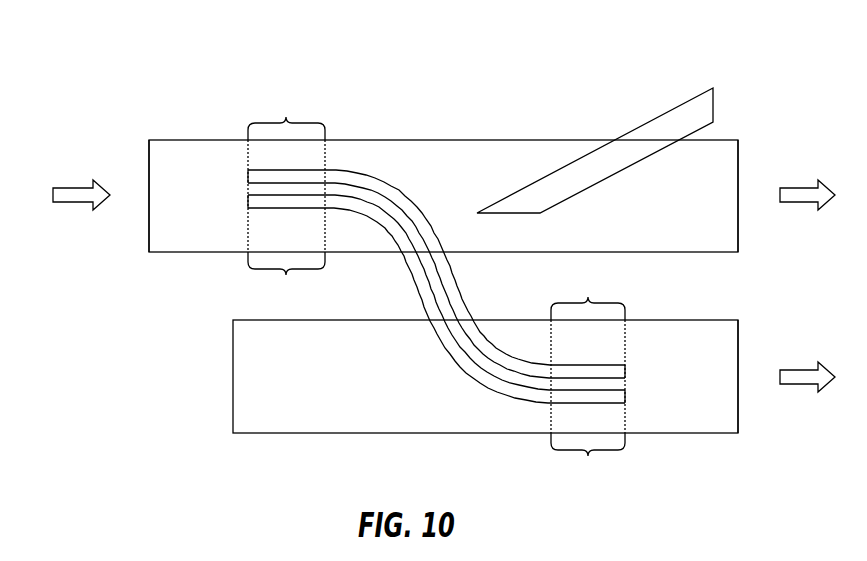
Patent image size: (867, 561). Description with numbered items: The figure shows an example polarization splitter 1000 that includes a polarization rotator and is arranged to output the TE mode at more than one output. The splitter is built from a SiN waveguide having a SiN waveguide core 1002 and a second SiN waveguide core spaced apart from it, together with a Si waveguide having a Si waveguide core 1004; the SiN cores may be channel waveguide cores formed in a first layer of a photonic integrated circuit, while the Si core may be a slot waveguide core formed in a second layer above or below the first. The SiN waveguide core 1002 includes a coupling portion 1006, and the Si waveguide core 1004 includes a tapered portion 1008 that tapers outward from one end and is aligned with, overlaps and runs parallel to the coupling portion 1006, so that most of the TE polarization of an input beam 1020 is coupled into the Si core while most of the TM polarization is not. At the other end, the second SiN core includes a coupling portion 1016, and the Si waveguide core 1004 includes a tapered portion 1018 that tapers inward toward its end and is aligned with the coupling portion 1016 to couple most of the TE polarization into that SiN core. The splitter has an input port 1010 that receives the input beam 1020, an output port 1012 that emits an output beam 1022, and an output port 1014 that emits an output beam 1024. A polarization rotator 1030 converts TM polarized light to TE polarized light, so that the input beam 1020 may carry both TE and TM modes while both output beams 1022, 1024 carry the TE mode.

The polarization splitter 1000 is at (770, 67).
The SiN waveguide core 1002 is at (473, 140).
The Si waveguide core 1004 is at (391, 182).
The coupling portion 1006 is at (286, 172).
The tapered portion 1008 is at (286, 276).
The input port 1010 is at (148, 210).
The output port 1012 is at (740, 152).
The output port 1014 is at (740, 420).
The coupling portion 1016 is at (588, 457).
The tapered portion 1018 is at (588, 358).
The input beam 1020 is at (80, 205).
The output beam 1022 is at (803, 205).
The output beam 1024 is at (803, 387).
The polarization rotator 1030 is at (592, 142).